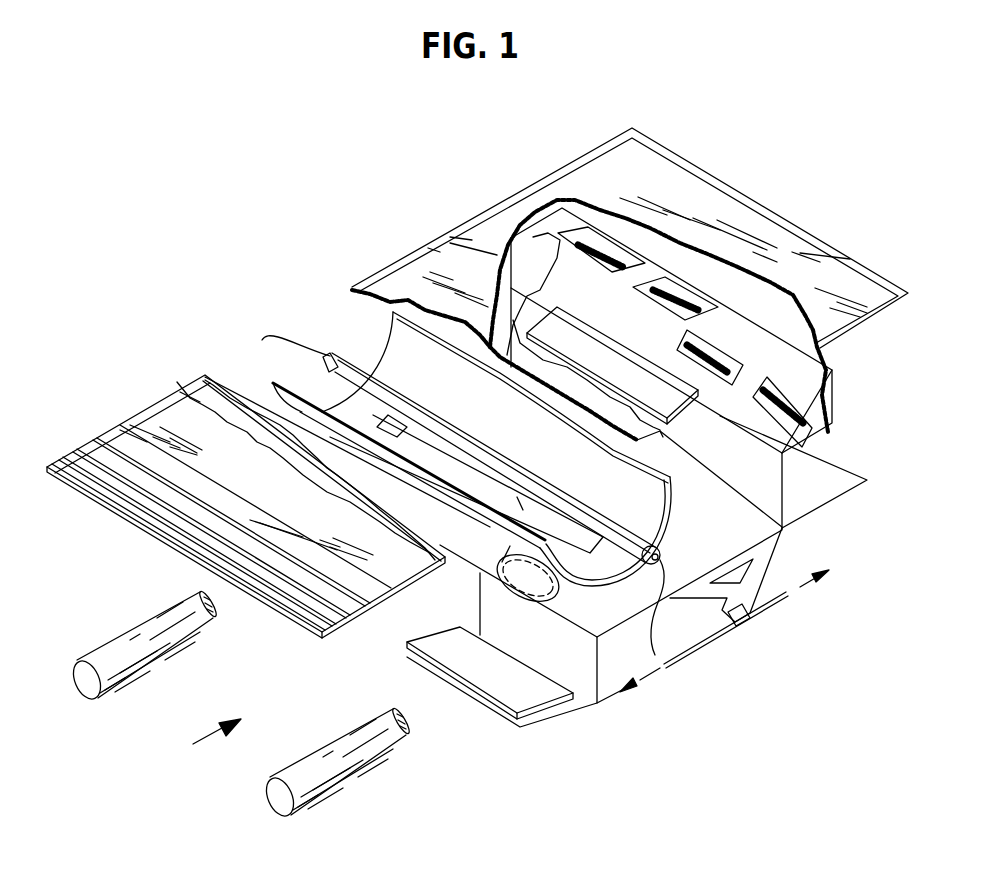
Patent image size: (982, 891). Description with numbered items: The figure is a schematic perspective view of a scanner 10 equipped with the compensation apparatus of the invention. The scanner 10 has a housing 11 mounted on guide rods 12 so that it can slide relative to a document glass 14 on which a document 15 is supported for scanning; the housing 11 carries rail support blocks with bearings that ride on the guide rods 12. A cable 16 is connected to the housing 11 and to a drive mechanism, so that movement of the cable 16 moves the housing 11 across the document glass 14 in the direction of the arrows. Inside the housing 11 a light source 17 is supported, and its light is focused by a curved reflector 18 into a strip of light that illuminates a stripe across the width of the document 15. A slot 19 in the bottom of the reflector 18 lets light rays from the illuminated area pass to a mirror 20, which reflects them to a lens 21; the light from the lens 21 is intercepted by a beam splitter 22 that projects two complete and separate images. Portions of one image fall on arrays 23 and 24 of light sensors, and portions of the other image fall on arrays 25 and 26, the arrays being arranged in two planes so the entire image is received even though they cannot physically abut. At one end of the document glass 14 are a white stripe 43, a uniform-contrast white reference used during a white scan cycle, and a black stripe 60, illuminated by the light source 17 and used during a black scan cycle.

The scanner 10 is at (206, 742).
The housing 11 is at (783, 487).
The guide rods 12 is at (158, 663).
The document glass 14 is at (68, 490).
The document 15 is at (182, 393).
The cable 16 is at (768, 605).
The light source 17 is at (372, 372).
The curved reflector 18 is at (278, 386).
The slot 19 is at (409, 443).
The mirror 20 is at (457, 677).
The lens 21 is at (534, 600).
The beam splitter 22 is at (610, 341).
The array of light sensors 23 is at (618, 256).
The array of light sensors 24 is at (698, 300).
The array of light sensors 25 is at (736, 352).
The array of light sensors 26 is at (790, 384).
The white stripe 43 is at (120, 500).
The black stripe 60 is at (108, 458).